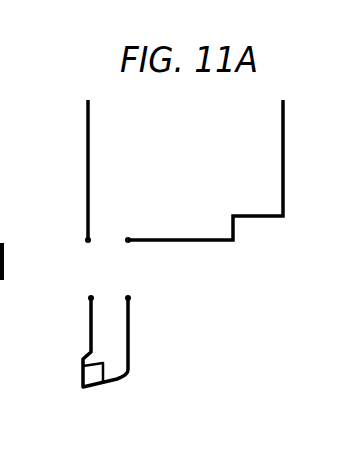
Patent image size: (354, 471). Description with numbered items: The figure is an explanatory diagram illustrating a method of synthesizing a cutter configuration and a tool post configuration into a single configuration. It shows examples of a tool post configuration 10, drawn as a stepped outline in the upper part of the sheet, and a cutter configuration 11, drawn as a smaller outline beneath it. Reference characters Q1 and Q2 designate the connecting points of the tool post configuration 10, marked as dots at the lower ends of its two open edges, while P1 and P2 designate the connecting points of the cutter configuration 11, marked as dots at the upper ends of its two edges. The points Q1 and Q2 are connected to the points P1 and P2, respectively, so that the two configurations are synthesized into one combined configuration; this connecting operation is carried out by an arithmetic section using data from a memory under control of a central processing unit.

The tool post configuration 10 is at (286, 157).
The cutter configuration 11 is at (130, 340).
The connecting point of the tool post configuration Q1 is at (85, 240).
The connecting point of the tool post configuration Q2 is at (129, 240).
The connecting point of the cutter configuration P1 is at (89, 298).
The connecting point of the cutter configuration P2 is at (130, 296).